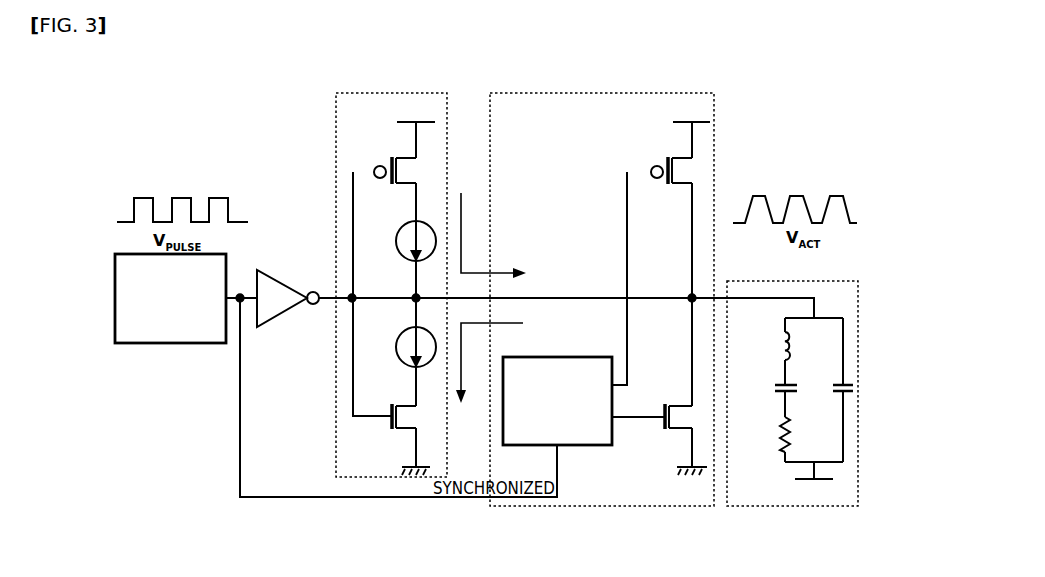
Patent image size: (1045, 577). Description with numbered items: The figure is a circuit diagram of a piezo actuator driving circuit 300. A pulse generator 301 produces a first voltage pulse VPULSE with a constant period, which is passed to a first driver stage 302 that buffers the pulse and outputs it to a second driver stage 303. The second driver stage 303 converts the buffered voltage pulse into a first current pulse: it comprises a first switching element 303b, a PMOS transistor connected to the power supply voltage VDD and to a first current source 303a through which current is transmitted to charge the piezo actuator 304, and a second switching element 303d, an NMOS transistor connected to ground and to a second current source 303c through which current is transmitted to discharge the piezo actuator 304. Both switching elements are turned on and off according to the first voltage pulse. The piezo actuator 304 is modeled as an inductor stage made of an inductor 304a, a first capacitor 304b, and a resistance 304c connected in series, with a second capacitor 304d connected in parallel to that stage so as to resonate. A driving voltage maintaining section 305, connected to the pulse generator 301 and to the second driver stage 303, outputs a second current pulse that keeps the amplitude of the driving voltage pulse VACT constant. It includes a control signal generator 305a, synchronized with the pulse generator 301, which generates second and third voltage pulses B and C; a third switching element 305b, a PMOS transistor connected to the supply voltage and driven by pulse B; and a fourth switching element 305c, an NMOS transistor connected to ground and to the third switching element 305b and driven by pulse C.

The piezo actuator driving circuit 300 is at (810, 111).
The pulse generator 301 is at (171, 343).
The first driver stage 302 is at (273, 321).
The second driver stage 303 is at (336, 143).
The first current source 303a is at (401, 223).
The first switching element 303b is at (386, 158).
The second current source 303c is at (402, 330).
The second switching element 303d is at (392, 403).
The piezo actuator 304 is at (858, 332).
The inductor 304a is at (780, 345).
The first capacitor 304b is at (795, 395).
The resistance 304c is at (780, 442).
The second capacitor 304d is at (855, 393).
The driving voltage maintaining section 305 is at (714, 140).
The control signal generator 305a is at (587, 447).
The third switching element 305b is at (661, 158).
The fourth switching element 305c is at (670, 400).